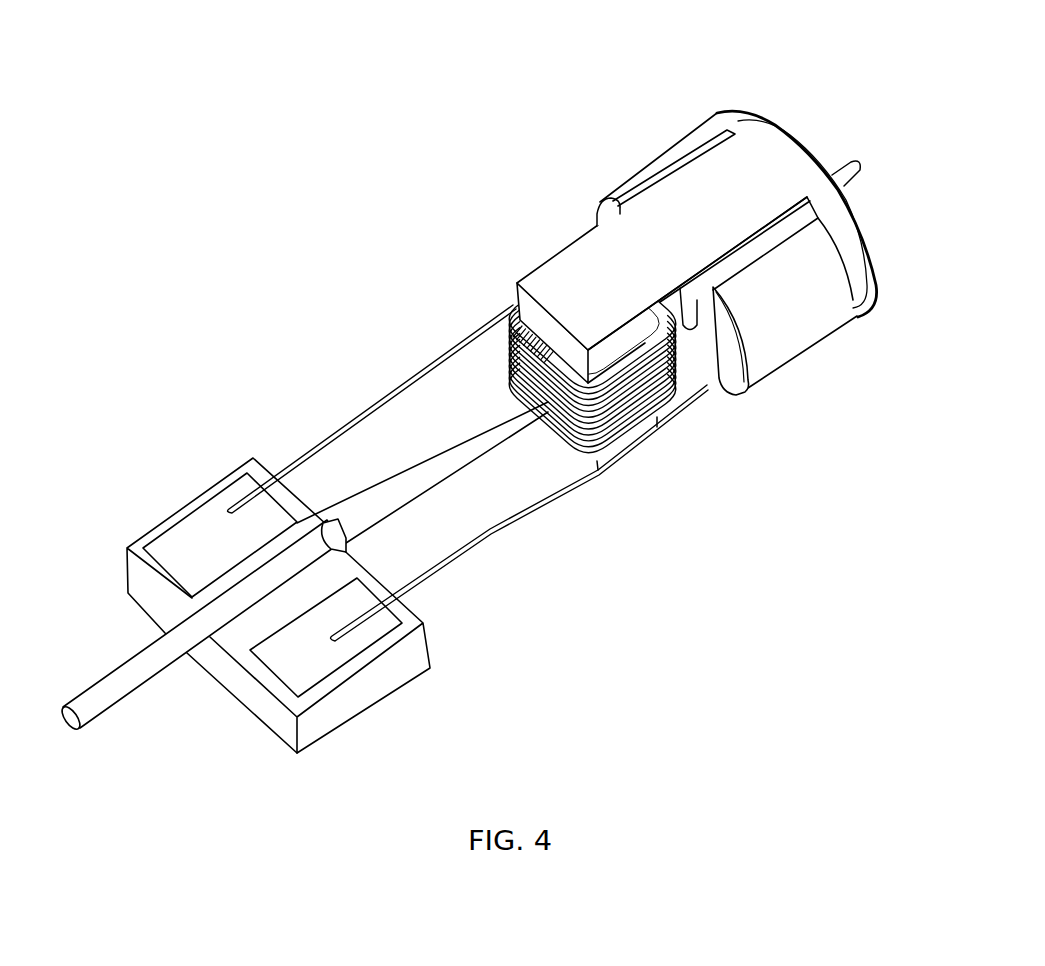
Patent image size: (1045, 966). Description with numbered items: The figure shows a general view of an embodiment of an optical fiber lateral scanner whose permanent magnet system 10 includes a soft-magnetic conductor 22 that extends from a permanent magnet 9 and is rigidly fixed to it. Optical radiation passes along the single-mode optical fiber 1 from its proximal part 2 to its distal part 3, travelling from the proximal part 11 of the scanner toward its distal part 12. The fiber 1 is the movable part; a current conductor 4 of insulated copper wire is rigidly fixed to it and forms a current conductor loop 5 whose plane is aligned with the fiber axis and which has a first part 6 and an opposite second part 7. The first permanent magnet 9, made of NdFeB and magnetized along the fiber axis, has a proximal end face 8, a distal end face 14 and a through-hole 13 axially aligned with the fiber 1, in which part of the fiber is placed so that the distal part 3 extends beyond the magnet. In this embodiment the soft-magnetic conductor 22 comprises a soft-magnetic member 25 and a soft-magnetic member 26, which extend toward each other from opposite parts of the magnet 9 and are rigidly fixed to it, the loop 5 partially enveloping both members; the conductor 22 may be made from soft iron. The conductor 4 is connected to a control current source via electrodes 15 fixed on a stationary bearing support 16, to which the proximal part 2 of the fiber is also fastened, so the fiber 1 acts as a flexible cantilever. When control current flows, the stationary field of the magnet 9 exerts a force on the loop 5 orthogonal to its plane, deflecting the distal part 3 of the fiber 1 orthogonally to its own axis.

The optical fiber 1 is at (385, 498).
The proximal part 2 is at (223, 400).
The distal part 3 is at (843, 177).
The current conductor 4 is at (358, 420).
The current conductor loop 5 is at (502, 342).
The first part 6 is at (683, 320).
The second part 7 is at (563, 410).
The proximal end face 8 is at (603, 205).
The first permanent magnet 9 is at (793, 307).
The permanent magnet system 10 is at (495, 461).
The proximal part of the optical fiber lateral scanner 11 is at (91, 753).
The distal part of the optical fiber lateral scanner 12 is at (813, 214).
The through-hole 13 is at (687, 330).
The distal end face 14 is at (759, 112).
The electrodes 15 is at (188, 330).
The bearing support 16 is at (387, 470).
The soft-magnetic conductor 22 is at (517, 381).
The soft-magnetic member 25 is at (578, 272).
The soft-magnetic member 26 is at (618, 449).